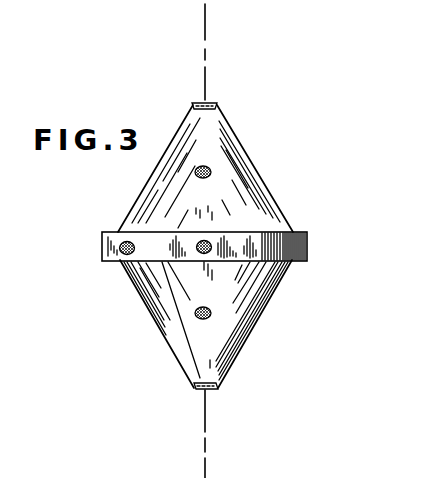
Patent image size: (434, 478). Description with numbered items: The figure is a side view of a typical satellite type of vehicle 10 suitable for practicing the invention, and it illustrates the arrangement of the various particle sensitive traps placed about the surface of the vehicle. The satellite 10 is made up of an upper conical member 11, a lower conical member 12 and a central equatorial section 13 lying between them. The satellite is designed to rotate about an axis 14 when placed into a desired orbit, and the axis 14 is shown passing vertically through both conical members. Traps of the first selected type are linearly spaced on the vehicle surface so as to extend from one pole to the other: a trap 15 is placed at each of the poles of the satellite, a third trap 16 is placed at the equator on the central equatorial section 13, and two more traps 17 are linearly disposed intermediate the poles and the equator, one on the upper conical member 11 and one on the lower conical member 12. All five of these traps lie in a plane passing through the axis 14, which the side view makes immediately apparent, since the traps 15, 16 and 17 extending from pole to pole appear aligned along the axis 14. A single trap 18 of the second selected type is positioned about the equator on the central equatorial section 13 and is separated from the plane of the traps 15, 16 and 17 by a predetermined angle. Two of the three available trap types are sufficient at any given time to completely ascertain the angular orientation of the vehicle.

The satellite type of vehicle 10 is at (284, 178).
The upper conical member 11 is at (204, 205).
The lower conical member 12 is at (217, 351).
The central equatorial section 13 is at (258, 240).
The axis 14 is at (207, 35).
The trap 15 is at (208, 104).
The third trap 16 is at (205, 240).
The traps 17 is at (204, 165).
The single trap 18 is at (122, 255).